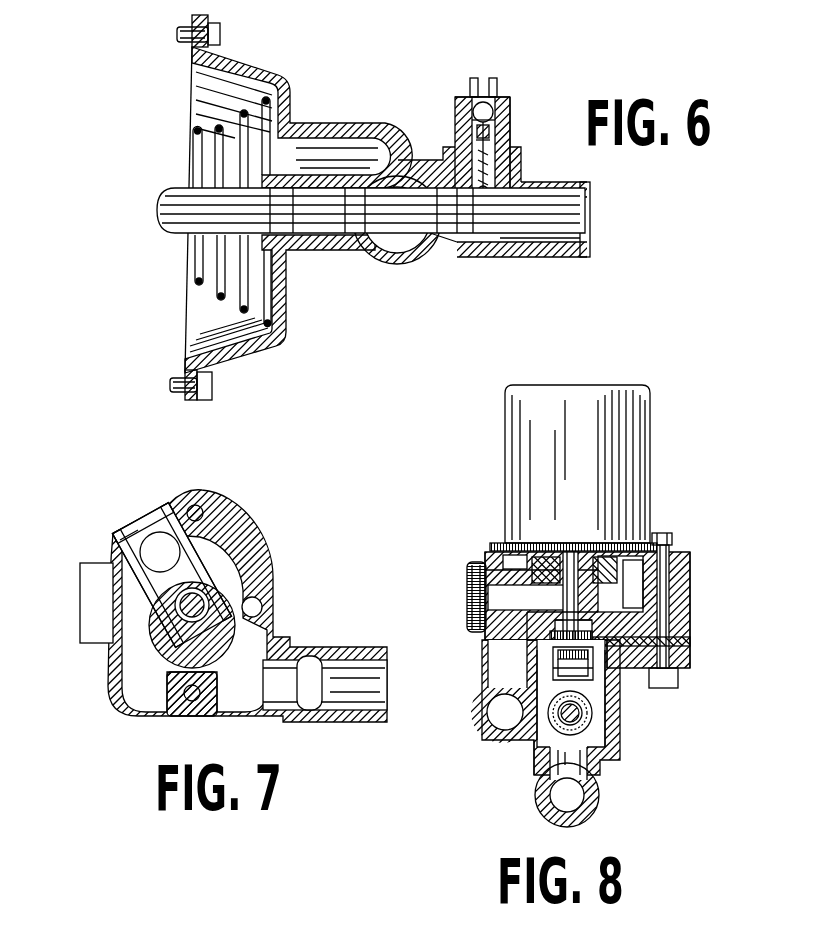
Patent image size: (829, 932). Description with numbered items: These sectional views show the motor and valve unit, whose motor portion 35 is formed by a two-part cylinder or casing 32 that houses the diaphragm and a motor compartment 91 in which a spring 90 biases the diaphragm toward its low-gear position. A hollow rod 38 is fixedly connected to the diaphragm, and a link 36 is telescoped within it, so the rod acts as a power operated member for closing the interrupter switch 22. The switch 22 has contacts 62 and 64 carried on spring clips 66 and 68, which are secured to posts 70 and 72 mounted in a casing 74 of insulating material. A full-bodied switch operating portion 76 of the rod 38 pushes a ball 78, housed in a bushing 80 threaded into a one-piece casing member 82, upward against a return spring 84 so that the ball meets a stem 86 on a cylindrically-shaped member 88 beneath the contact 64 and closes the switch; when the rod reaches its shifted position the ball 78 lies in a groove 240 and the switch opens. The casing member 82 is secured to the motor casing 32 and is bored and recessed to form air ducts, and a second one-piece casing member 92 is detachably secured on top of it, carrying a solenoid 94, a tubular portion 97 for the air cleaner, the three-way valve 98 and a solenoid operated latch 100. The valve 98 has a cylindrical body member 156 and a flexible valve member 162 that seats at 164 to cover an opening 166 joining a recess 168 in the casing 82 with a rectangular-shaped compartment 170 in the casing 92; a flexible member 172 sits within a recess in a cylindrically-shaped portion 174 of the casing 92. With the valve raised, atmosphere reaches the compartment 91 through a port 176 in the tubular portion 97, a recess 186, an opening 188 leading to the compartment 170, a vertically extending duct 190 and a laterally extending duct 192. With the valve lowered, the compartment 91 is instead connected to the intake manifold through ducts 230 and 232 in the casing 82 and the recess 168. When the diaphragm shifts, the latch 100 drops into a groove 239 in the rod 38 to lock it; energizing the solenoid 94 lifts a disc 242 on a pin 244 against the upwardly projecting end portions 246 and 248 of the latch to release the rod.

In FIG. 6, the interrupter switch 22 is at (478, 94).
In FIG. 6, the two-part cylinder or casing 32 is at (286, 343).
In FIG. 6, the motor portion 35 is at (286, 272).
In FIG. 8, the link 36 is at (577, 713).
In FIG. 6, the hollow rod 38 is at (178, 195).
In FIG. 8, the hollow rod 38 is at (593, 721).
In FIG. 6, the contact 62 is at (455, 110).
In FIG. 6, the contact 64 is at (455, 120).
In FIG. 6, the spring clip 66 is at (455, 102).
In FIG. 6, the spring clip 68 is at (510, 107).
In FIG. 6, the post 70 is at (474, 78).
In FIG. 6, the post 72 is at (500, 82).
In FIG. 6, the casing of insulating material 74 is at (493, 127).
In FIG. 6, the full-bodied switch operating portion 76 is at (437, 255).
In FIG. 6, the ball 78 is at (525, 183).
In FIG. 6, the bushing 80 is at (521, 152).
In FIG. 6, the one-piece casing member 82 is at (530, 258).
In FIG. 8, the one-piece casing member 82 is at (517, 747).
In FIG. 6, the return spring 84 is at (445, 152).
In FIG. 6, the stem 86 is at (468, 198).
In FIG. 6, the cylindrically-shaped member 88 is at (497, 117).
In FIG. 6, the spring 90 is at (198, 268).
In FIG. 6, the motor compartment 91 is at (242, 80).
In FIG. 7, the one-piece casing member 92 is at (197, 535).
In FIG. 8, the one-piece casing member 92 is at (692, 592).
In FIG. 8, the solenoid 94 is at (633, 497).
In FIG. 7, the tubular portion 97 is at (327, 647).
In FIG. 8, the three-way valve 98 is at (690, 570).
In FIG. 8, the solenoid operated latch 100 is at (552, 665).
In FIG. 7, the cylindrical body member 156 is at (238, 575).
In FIG. 8, the cylindrical body member 156 is at (516, 556).
In FIG. 8, the flexible valve member 162 is at (690, 645).
In FIG. 8, the valve seat 164 is at (640, 628).
In FIG. 7, the opening 166 is at (205, 607).
In FIG. 8, the opening 166 is at (563, 603).
In FIG. 8, the recess 168 is at (597, 737).
In FIG. 7, the rectangular-shaped compartment 170 is at (183, 623).
In FIG. 8, the rectangular-shaped compartment 170 is at (477, 588).
In FIG. 8, the flexible member 172 is at (618, 563).
In FIG. 8, the cylindrically-shaped portion 174 is at (645, 545).
In FIG. 7, the port 176 is at (308, 693).
In FIG. 7, the recess 186 is at (133, 690).
In FIG. 8, the recess 186 is at (485, 553).
In FIG. 8, the opening 188 is at (543, 556).
In FIG. 8, the vertically extending duct 190 is at (497, 650).
In FIG. 6, the laterally extending duct 192 is at (313, 150).
In FIG. 8, the laterally extending duct 192 is at (495, 717).
In FIG. 8, the duct 230 is at (577, 798).
In FIG. 8, the duct 232 is at (537, 777).
In FIG. 6, the groove 239 is at (285, 195).
In FIG. 6, the groove 240 is at (380, 262).
In FIG. 8, the disc 242 is at (548, 668).
In FIG. 8, the pin 244 is at (545, 630).
In FIG. 8, the upwardly projecting end portion 246 is at (555, 645).
In FIG. 8, the upwardly projecting end portion 248 is at (690, 664).